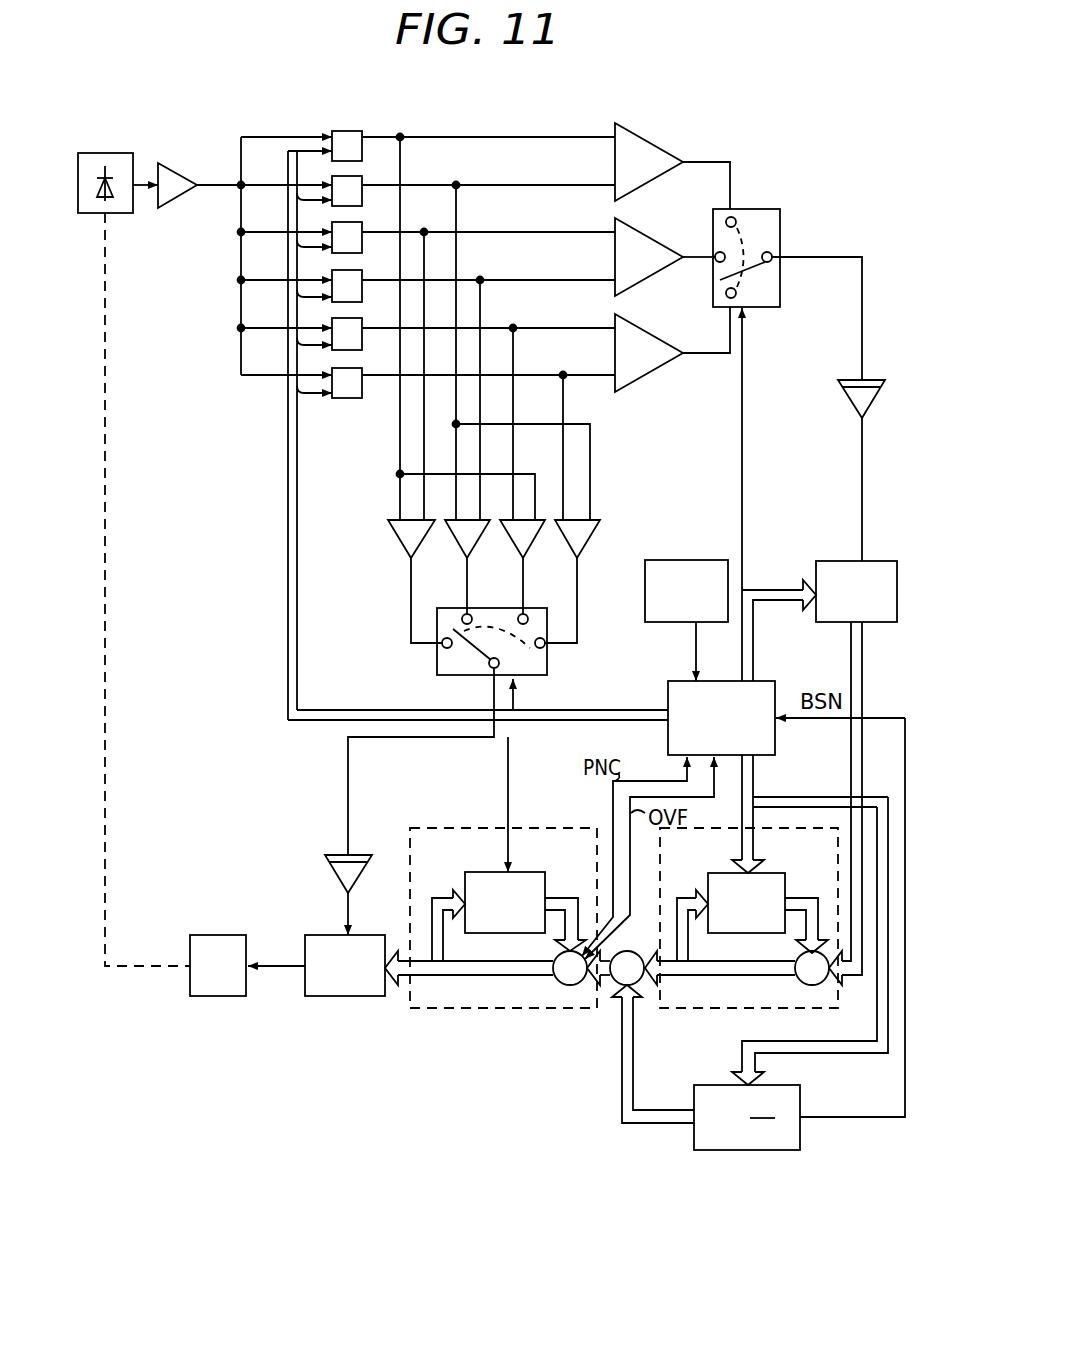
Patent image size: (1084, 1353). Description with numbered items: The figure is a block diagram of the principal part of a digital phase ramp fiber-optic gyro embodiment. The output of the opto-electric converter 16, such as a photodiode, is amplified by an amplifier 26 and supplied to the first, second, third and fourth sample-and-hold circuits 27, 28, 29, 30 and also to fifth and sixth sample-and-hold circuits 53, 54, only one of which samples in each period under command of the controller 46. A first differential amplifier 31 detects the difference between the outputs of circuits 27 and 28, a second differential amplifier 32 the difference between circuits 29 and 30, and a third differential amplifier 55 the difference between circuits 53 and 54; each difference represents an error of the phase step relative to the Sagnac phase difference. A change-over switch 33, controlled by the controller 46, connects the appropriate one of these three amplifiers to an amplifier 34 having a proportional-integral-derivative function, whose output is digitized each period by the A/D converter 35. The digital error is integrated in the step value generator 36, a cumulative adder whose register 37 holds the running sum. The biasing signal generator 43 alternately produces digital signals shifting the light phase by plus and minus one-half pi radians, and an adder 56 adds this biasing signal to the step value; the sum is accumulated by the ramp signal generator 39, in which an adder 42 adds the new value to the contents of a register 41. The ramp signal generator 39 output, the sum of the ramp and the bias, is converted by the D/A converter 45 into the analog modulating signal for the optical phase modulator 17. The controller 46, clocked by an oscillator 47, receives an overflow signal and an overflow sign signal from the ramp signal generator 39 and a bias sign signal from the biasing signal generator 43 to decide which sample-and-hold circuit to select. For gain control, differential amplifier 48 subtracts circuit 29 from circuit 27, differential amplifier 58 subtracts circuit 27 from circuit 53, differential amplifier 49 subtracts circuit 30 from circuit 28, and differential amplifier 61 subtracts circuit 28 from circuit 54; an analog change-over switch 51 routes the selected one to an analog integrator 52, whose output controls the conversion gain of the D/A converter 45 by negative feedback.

The opto-electric converter 16 is at (109, 153).
The optical phase modulator 17 is at (240, 997).
The amplifier 26 is at (178, 171).
The first sample-and-hold circuit 27 is at (362, 132).
The second sample-and-hold circuit 28 is at (362, 177).
The third sample-and-hold circuit 29 is at (362, 223).
The fourth sample-and-hold circuit 30 is at (362, 271).
The first differential amplifier 31 is at (643, 139).
The second differential amplifier 32 is at (643, 231).
The change-over switch 33 is at (782, 216).
The amplifier 34 is at (865, 379).
The A/D converter 35 is at (863, 561).
The step value generator 36 is at (690, 1010).
The register 37 is at (773, 873).
The ramp signal generator 39 is at (440, 1010).
The register 41 is at (540, 873).
The adder 42 is at (558, 982).
The biasing signal generator 43 is at (801, 1086).
The D/A converter 45 is at (364, 935).
The controller 46 is at (777, 688).
The oscillator 47 is at (697, 561).
The differential amplifier 48 is at (418, 549).
The differential amplifier 49 is at (473, 550).
The analog change-over switch 51 is at (548, 667).
The analog integrator 52 is at (332, 869).
The fifth sample-and-hold circuit 53 is at (362, 319).
The sixth sample-and-hold circuit 54 is at (362, 398).
The third differential amplifier 55 is at (643, 326).
The adder 56 is at (612, 988).
The differential amplifier 58 is at (530, 550).
The differential amplifier 61 is at (585, 550).